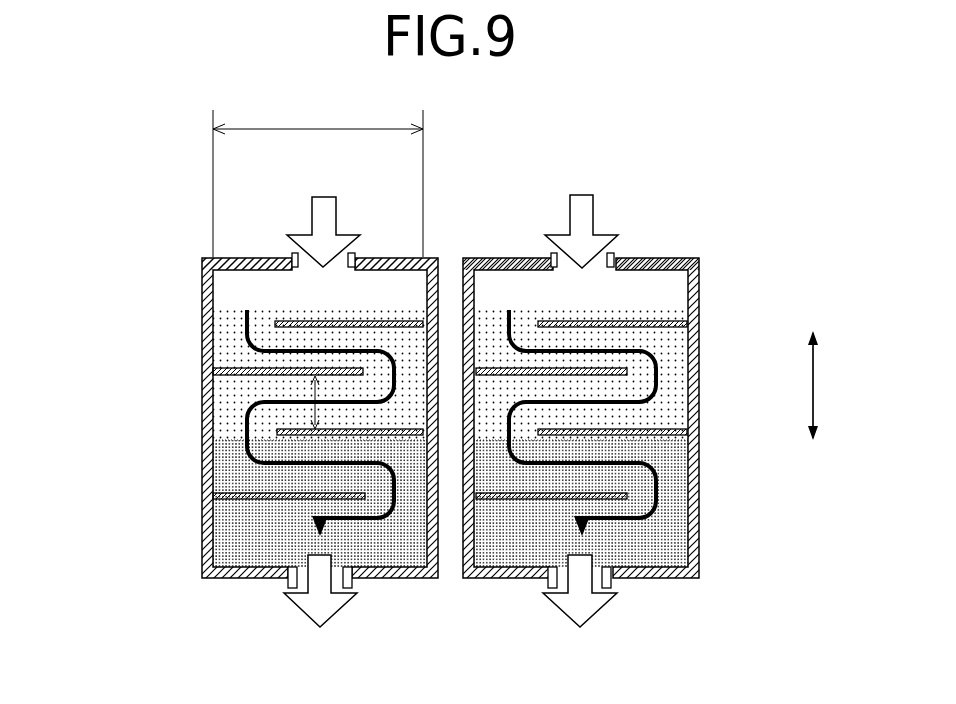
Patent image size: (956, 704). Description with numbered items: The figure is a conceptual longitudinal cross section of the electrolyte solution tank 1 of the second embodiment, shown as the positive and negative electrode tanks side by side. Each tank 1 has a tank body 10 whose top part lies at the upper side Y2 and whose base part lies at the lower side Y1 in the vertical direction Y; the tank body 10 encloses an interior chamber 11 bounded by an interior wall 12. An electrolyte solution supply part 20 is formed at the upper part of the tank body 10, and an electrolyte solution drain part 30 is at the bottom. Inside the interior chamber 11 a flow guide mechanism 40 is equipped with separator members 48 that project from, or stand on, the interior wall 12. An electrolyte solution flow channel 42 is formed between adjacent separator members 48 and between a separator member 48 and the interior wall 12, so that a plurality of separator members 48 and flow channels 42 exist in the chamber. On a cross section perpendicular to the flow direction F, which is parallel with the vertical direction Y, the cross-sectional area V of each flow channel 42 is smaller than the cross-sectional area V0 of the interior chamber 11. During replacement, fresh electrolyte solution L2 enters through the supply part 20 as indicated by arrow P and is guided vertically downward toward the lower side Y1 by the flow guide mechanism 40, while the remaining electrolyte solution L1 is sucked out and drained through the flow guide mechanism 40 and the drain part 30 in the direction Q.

The electrolyte solution tank 1 is at (435, 412).
The tank body 10 is at (450, 375).
The interior chamber 11 is at (233, 300).
The interior wall 12 is at (250, 257).
The electrolyte solution supply part 20 is at (353, 255).
The electrolyte solution drain part 30 is at (287, 579).
The flow guide mechanism 40 is at (431, 460).
The separator member 48 is at (253, 497).
The electrolyte solution flow channel 42 is at (223, 405).
The remaining electrolyte solution L1 is at (223, 468).
The fresh electrolyte solution L2 is at (233, 343).
The flow direction F is at (237, 433).
The cross-sectional area of the electrolyte solution flow channel V is at (312, 395).
The cross-sectional area of the interior chamber V0 is at (318, 175).
The arrow P (fresh electrolyte solution introduction direction) P is at (320, 210).
The direction Q (drain direction) Q is at (317, 608).
The vertical direction Y is at (826, 385).
The lower side Y1 is at (817, 430).
The upper side Y2 is at (817, 344).